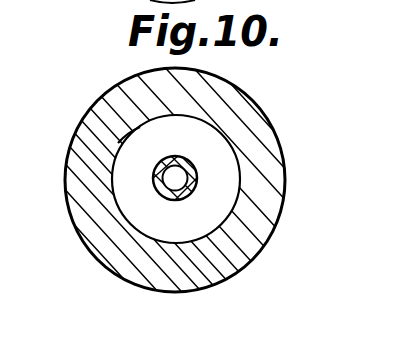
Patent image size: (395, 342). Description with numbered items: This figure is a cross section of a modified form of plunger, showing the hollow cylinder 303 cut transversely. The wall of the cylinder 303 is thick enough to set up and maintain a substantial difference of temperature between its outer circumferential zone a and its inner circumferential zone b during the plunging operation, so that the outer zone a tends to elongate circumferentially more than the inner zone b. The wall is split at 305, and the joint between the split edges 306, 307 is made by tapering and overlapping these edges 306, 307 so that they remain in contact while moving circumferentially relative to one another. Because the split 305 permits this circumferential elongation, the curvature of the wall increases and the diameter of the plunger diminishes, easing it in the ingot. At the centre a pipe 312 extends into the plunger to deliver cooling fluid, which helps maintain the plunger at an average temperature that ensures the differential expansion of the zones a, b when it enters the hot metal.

The hollow cylinder 303 is at (230, 100).
The split 305 is at (130, 141).
The split edge 306 is at (94, 158).
The split edge 307 is at (113, 141).
The pipe 312 is at (197, 176).
The outer circumferential zone a is at (266, 221).
The inner circumferential zone b is at (235, 208).